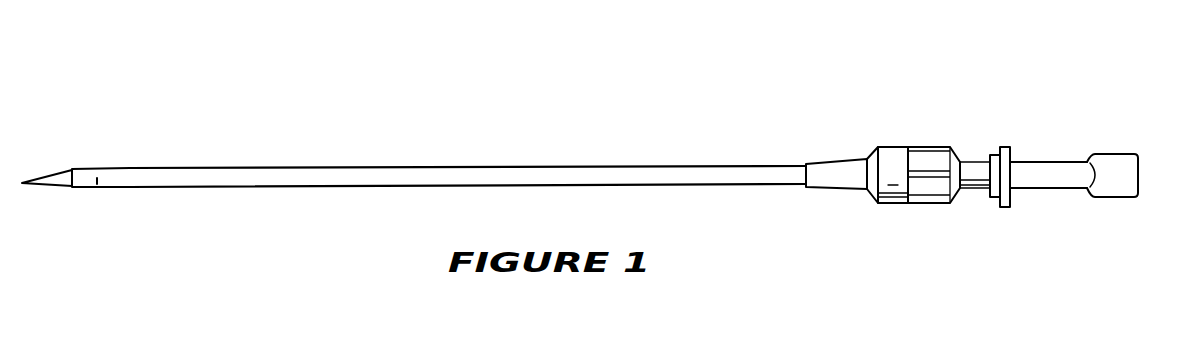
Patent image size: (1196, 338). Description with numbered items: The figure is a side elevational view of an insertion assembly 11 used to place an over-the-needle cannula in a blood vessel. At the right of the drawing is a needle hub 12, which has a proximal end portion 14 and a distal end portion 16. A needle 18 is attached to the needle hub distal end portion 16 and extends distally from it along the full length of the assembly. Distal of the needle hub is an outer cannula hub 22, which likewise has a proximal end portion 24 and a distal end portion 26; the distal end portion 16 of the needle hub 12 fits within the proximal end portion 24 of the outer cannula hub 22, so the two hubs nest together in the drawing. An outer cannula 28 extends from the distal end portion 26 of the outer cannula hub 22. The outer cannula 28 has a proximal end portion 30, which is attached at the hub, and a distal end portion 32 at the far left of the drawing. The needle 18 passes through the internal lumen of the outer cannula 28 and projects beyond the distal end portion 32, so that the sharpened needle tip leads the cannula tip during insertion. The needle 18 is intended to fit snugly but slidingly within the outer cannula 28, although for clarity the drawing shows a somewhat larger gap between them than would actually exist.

The insertion assembly 11 is at (353, 113).
The needle hub 12 is at (1065, 158).
The proximal end portion 14 is at (1117, 155).
The distal end portion 16 is at (1021, 157).
The needle 18 is at (63, 169).
The outer cannula hub 22 is at (904, 147).
The proximal end portion 24 is at (973, 158).
The distal end portion 26 is at (840, 190).
The outer cannula 28 is at (268, 167).
The proximal end portion 30 is at (793, 188).
The distal end portion 32 is at (98, 170).